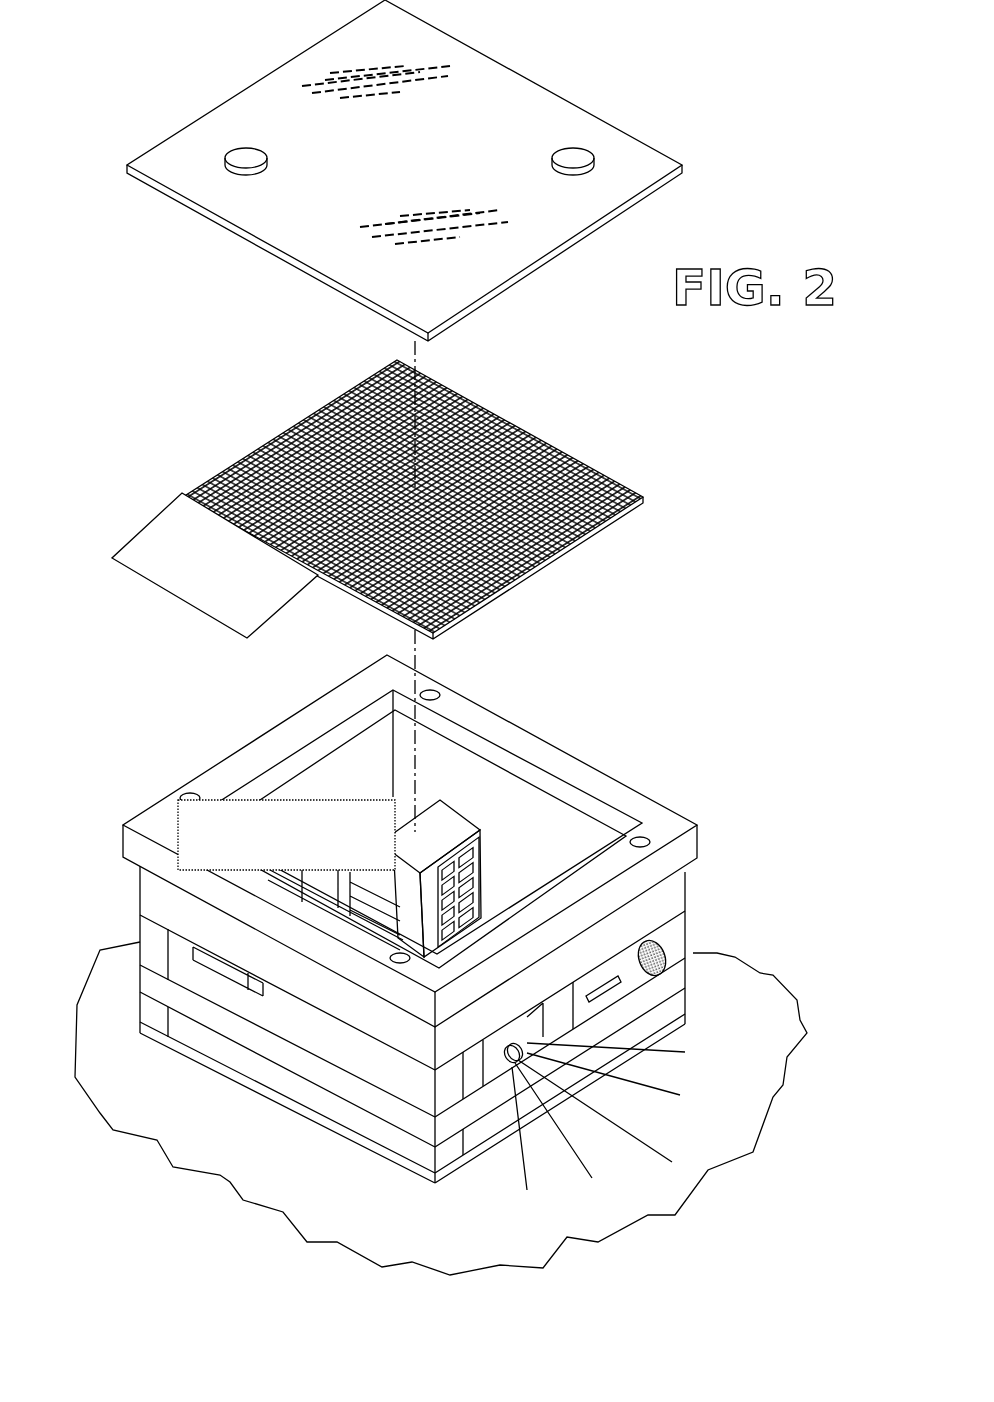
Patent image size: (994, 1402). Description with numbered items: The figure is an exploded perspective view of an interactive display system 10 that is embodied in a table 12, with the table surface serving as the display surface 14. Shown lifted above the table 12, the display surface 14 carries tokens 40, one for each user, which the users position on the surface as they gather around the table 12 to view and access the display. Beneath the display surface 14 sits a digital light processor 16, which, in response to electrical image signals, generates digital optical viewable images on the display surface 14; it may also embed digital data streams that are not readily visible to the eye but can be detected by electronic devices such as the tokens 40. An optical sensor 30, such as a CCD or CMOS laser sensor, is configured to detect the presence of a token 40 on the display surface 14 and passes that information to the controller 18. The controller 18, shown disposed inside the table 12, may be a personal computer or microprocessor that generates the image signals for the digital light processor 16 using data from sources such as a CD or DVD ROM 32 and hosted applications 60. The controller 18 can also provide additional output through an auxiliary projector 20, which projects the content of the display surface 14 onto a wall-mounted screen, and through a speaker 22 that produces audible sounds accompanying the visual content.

The interactive display system 10 is at (63, 1188).
The table 12 is at (650, 778).
The display surface 14 is at (565, 75).
The digital light processor 16 is at (526, 416).
The controller 18 is at (442, 800).
The projector 20 is at (497, 1092).
The speaker 22 is at (671, 938).
The optical sensor 30 is at (215, 565).
The CD or DVD ROM 32 is at (610, 998).
The token 40 is at (245, 152).
The applications 60 is at (286, 835).